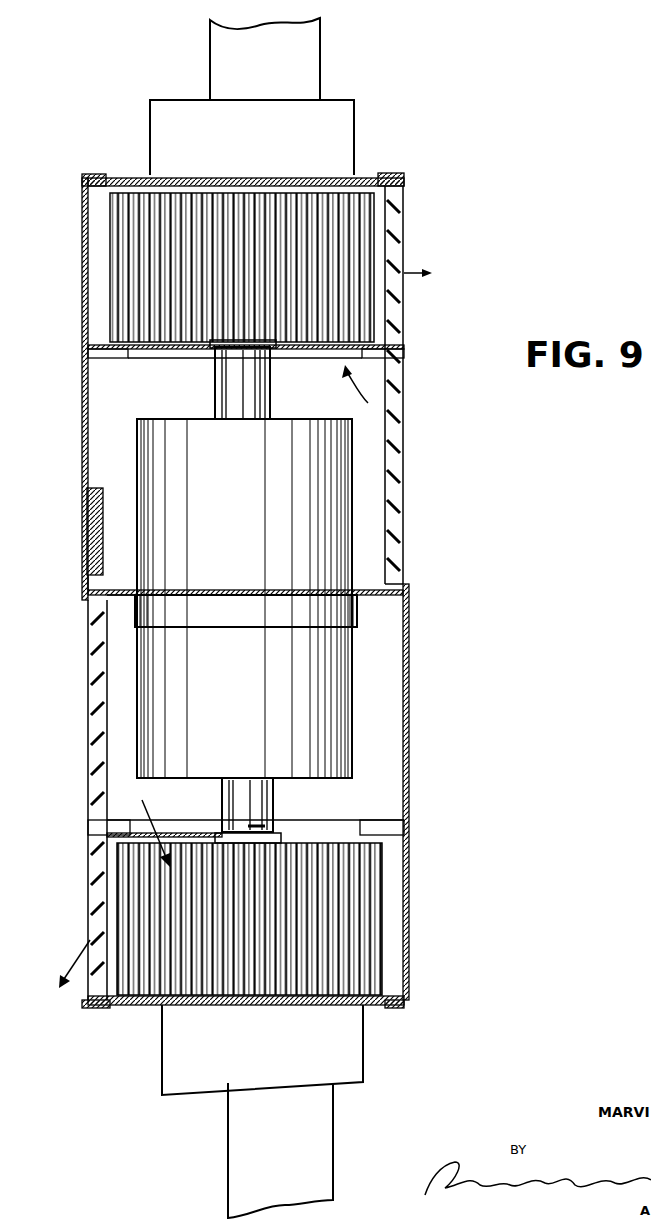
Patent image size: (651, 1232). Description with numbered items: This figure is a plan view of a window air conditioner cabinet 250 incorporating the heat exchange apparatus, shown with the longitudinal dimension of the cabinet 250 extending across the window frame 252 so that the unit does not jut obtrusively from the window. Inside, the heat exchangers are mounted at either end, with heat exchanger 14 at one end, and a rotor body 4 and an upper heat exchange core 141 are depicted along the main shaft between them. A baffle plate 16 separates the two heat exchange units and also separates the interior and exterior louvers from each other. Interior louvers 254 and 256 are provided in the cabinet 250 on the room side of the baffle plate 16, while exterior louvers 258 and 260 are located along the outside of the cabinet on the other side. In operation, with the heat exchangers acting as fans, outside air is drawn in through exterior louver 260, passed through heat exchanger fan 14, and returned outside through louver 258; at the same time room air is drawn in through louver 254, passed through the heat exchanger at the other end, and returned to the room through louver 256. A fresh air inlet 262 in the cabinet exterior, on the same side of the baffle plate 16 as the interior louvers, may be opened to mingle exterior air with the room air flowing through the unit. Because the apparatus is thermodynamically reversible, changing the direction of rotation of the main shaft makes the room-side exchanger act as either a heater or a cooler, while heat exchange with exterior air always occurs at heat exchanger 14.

The rotor 4 is at (231, 485).
The heat exchanger 14 is at (352, 950).
The baffle plate 16 is at (385, 590).
The upper stator 141 is at (205, 325).
The cabinet 250 is at (409, 887).
The window frame 252 is at (363, 1045).
The interior louver 254 is at (398, 522).
The interior louver 256 is at (405, 320).
The exterior louver 258 is at (97, 890).
The exterior louver 260 is at (93, 690).
The fresh air inlet 262 is at (95, 543).